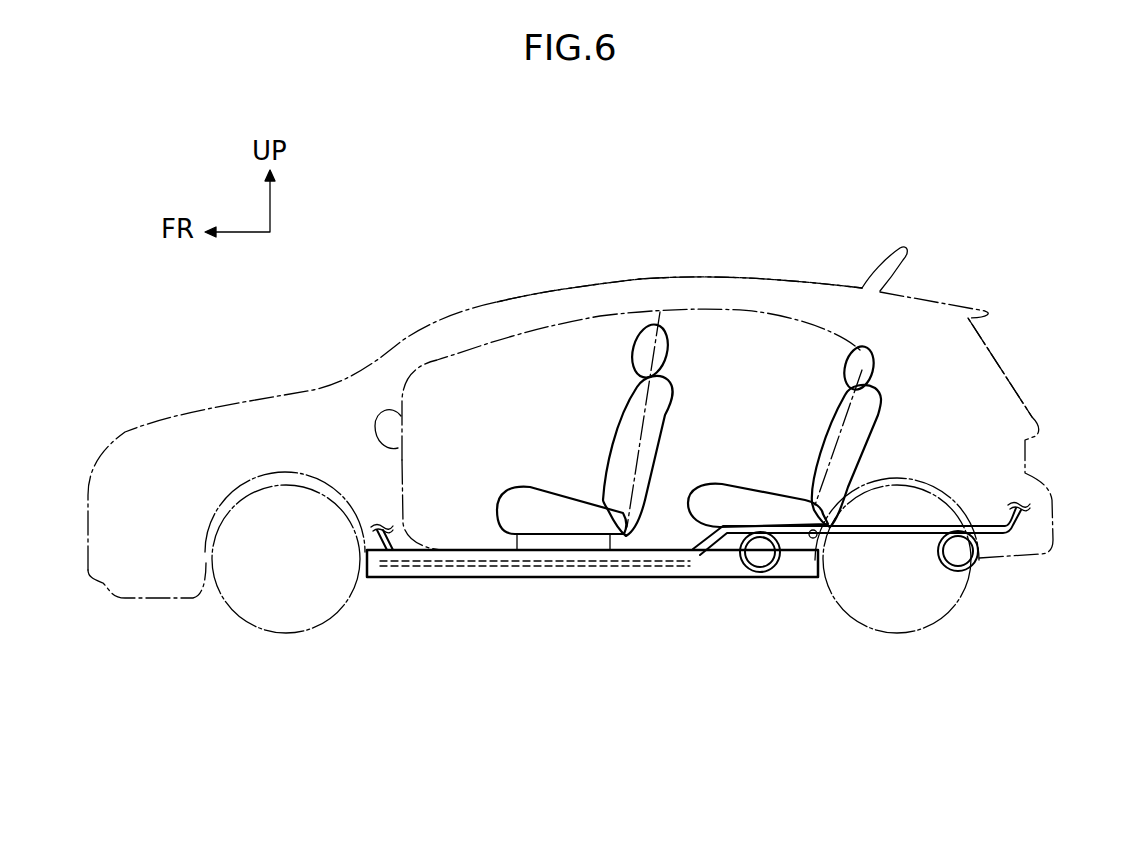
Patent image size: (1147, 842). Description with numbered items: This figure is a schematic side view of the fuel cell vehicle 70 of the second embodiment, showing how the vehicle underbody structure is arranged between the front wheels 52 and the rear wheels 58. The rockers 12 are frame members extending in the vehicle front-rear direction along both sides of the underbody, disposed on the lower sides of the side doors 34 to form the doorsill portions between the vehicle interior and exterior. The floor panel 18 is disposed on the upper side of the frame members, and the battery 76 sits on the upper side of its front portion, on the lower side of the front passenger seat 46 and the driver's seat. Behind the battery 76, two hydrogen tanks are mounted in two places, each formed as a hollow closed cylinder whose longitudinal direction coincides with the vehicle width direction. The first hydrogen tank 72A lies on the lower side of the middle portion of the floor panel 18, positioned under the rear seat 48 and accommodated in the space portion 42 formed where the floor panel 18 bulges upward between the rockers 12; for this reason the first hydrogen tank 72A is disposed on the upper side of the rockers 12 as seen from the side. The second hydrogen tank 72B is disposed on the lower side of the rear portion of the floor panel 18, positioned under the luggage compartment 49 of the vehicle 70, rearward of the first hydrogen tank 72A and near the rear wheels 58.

The rockers 12 is at (420, 578).
The floor panel 18 is at (908, 527).
The side doors 34 is at (503, 337).
The space portion 42 is at (803, 510).
The front passenger seat 46 is at (665, 358).
The rear seat 48 is at (870, 366).
The luggage compartment 49 is at (1001, 428).
The front wheels 52 is at (280, 634).
The rear wheels 58 is at (898, 634).
The vehicle 70 is at (123, 668).
The first hydrogen tank 72A is at (717, 528).
The second hydrogen tank 72B is at (963, 572).
The battery 76 is at (558, 530).